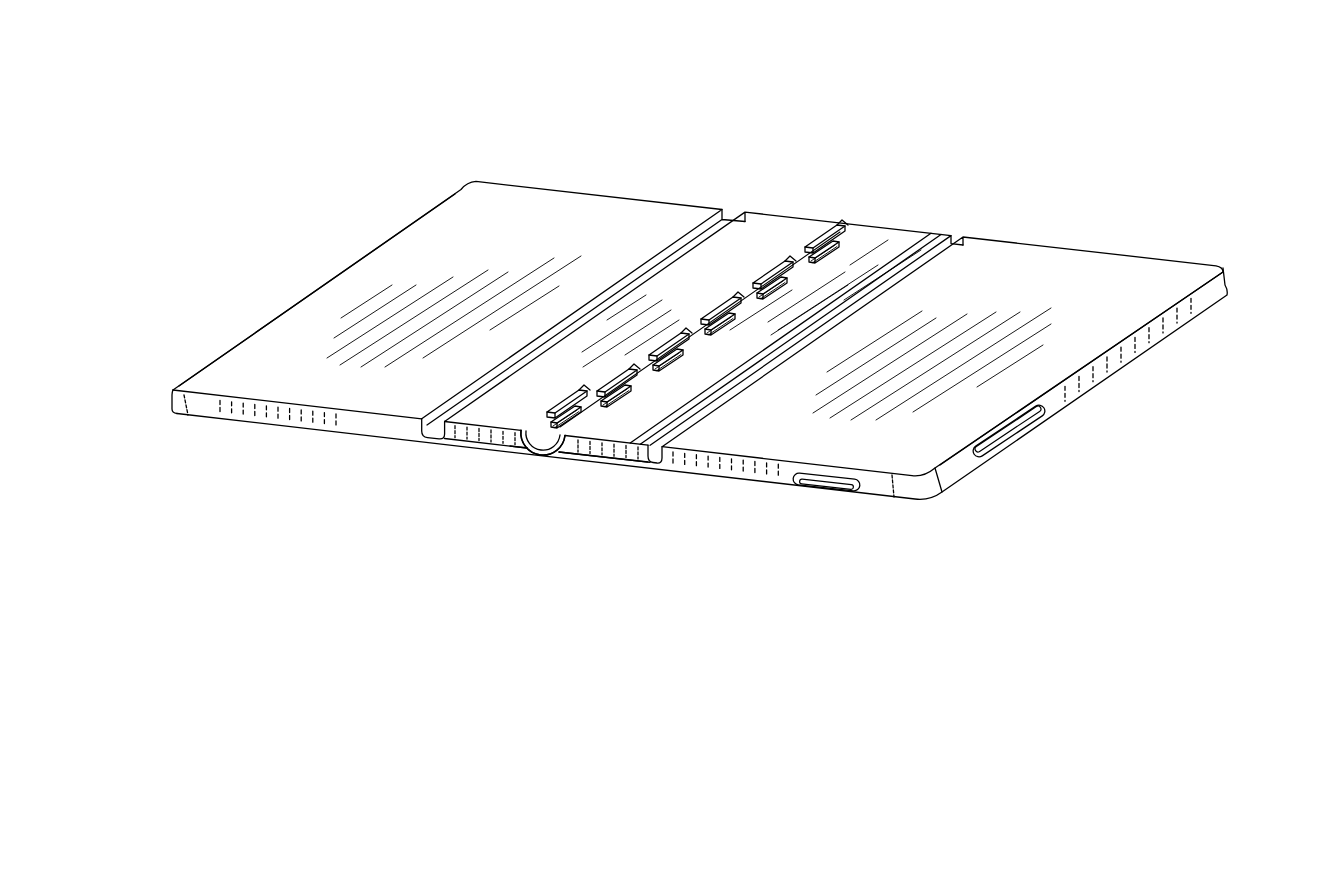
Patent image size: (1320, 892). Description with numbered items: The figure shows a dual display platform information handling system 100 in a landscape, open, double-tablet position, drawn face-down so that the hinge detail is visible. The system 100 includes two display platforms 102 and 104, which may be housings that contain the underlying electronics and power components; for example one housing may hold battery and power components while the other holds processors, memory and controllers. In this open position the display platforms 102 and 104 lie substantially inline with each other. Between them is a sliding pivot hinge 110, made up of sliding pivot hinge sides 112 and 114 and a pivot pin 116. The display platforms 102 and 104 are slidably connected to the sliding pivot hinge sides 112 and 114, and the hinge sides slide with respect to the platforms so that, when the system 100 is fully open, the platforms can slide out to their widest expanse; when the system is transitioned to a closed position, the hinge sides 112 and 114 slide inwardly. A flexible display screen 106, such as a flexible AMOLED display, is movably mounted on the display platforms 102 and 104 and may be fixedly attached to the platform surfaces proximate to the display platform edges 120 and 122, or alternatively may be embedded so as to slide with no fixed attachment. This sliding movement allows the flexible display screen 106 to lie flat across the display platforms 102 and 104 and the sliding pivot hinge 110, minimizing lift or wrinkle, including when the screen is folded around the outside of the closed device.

The information handling system 100 is at (246, 98).
The display platform 102 is at (372, 270).
The display platform 104 is at (1107, 280).
The flexible display screen 106 is at (348, 443).
The sliding pivot hinge 110 is at (987, 170).
The sliding pivot hinge side 112 is at (773, 227).
The sliding pivot hinge side 114 is at (912, 240).
The pivot pin 116 is at (543, 458).
The display platform edge 120 is at (288, 306).
The display platform edge 122 is at (1130, 347).